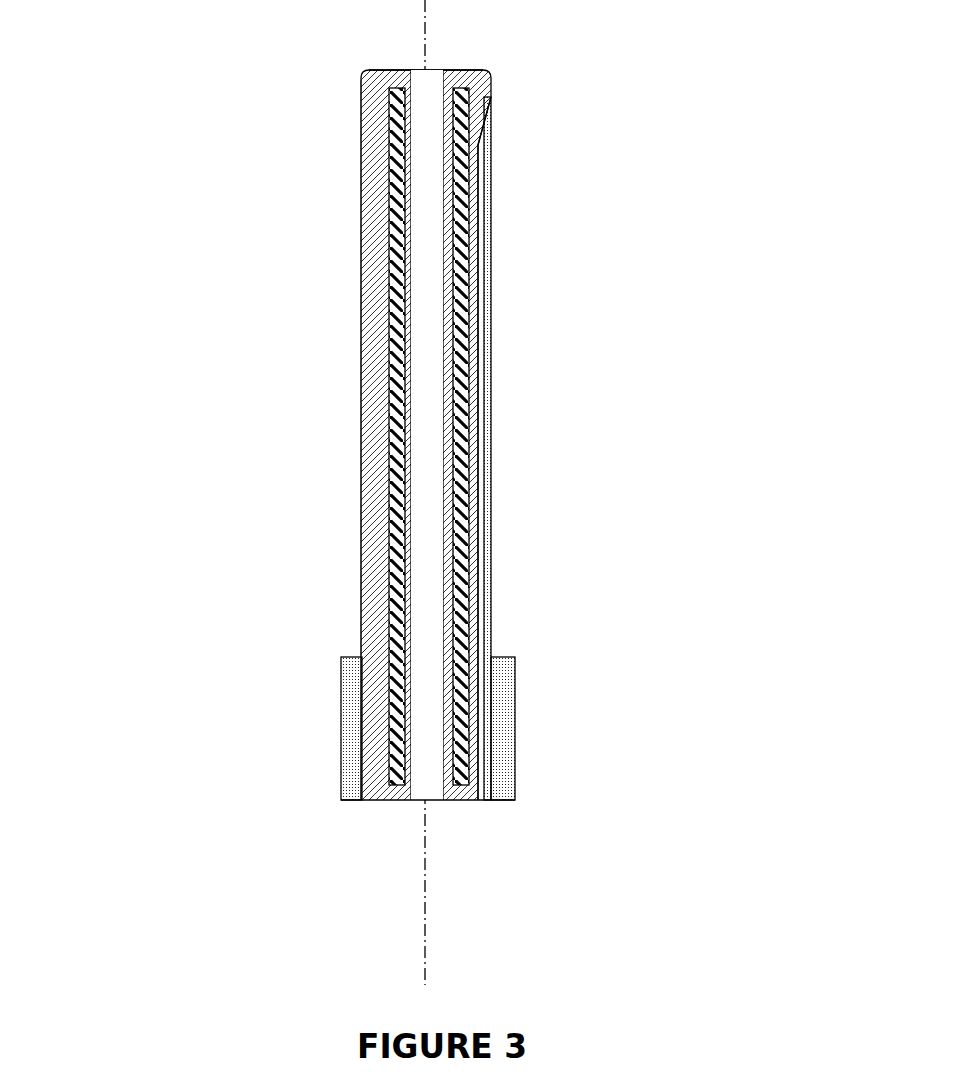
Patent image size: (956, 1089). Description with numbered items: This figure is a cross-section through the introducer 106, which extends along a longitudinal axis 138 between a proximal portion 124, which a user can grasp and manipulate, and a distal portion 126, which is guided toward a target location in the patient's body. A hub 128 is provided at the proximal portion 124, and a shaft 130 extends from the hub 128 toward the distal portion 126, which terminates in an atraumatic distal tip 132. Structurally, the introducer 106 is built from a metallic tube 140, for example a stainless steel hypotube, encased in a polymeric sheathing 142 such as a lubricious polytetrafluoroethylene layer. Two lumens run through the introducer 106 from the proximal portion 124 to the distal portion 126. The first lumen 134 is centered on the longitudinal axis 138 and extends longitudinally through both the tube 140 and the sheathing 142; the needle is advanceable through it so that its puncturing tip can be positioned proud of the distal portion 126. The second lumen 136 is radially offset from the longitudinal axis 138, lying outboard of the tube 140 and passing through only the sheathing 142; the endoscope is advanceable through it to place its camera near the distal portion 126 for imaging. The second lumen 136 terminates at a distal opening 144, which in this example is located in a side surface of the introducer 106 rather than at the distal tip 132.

The introducer 106 is at (188, 227).
The proximal portion 124 is at (500, 623).
The distal portion 126 is at (354, 160).
The hub 128 is at (348, 725).
The shaft 130 is at (491, 380).
The distal tip 132 is at (480, 68).
The first lumen 134 is at (431, 134).
The second lumen 136 is at (492, 208).
The longitudinal axis 138 is at (424, 945).
The metallic tube 140 is at (392, 378).
The polymeric sheathing 142 is at (370, 460).
The distal opening 144 is at (490, 116).